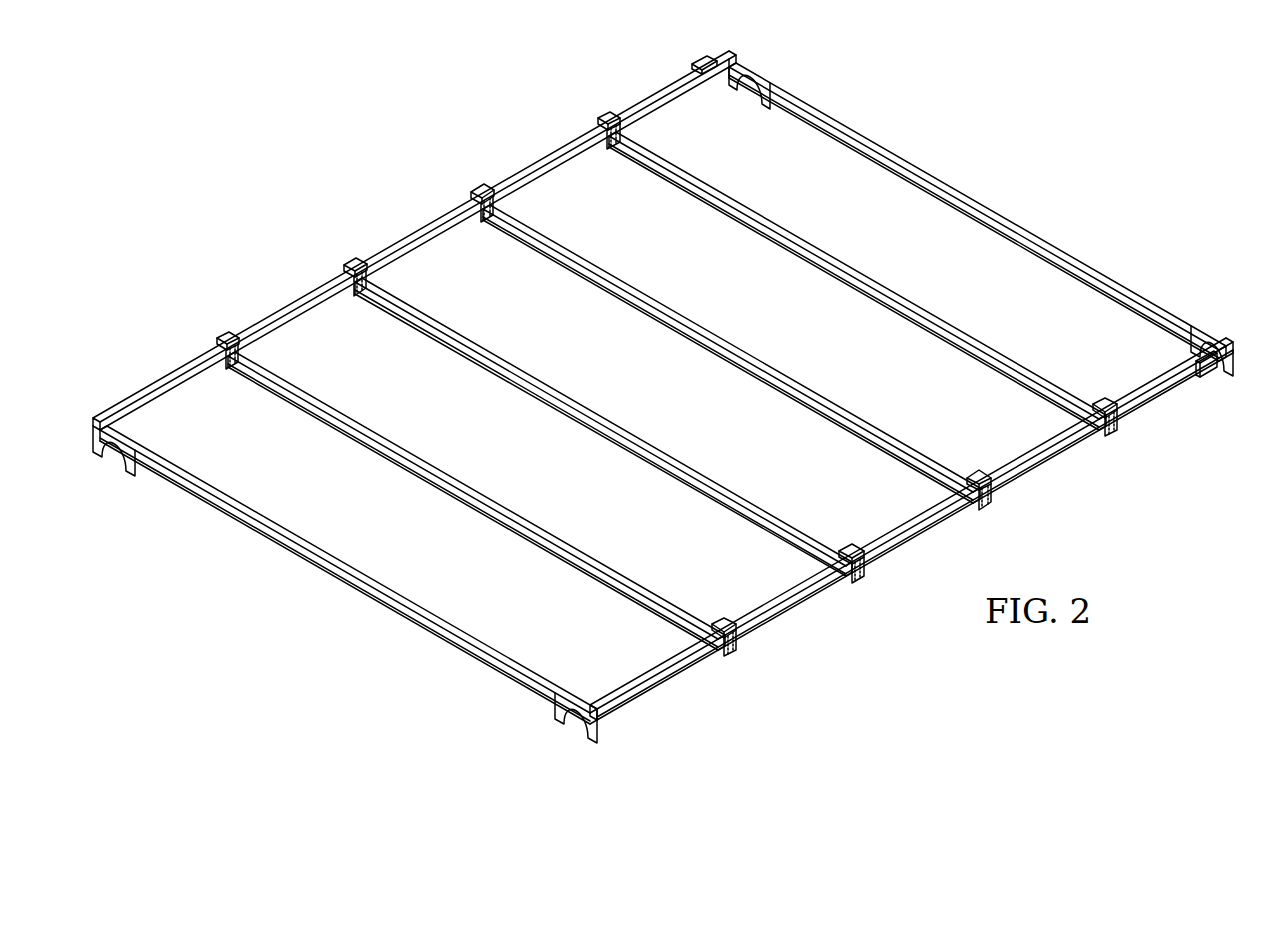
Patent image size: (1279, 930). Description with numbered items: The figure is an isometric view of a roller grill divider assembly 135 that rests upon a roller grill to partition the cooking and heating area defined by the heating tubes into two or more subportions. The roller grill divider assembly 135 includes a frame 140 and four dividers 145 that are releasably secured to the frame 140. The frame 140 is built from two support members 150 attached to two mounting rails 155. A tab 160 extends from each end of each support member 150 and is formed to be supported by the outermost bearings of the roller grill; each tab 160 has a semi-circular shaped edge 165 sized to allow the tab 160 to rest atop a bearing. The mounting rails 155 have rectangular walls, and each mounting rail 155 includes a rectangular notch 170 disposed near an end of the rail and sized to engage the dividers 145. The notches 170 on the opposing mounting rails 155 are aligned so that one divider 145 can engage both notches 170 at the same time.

The roller grill divider assembly 135 is at (673, 387).
The frame 140 is at (540, 158).
The divider 145 is at (386, 462).
The support member 150 is at (352, 578).
The mounting rail 155 is at (417, 233).
The tab 160 is at (663, 408).
The semi-circular shaped edge 165 is at (572, 716).
The rectangular notch 170 is at (700, 64).